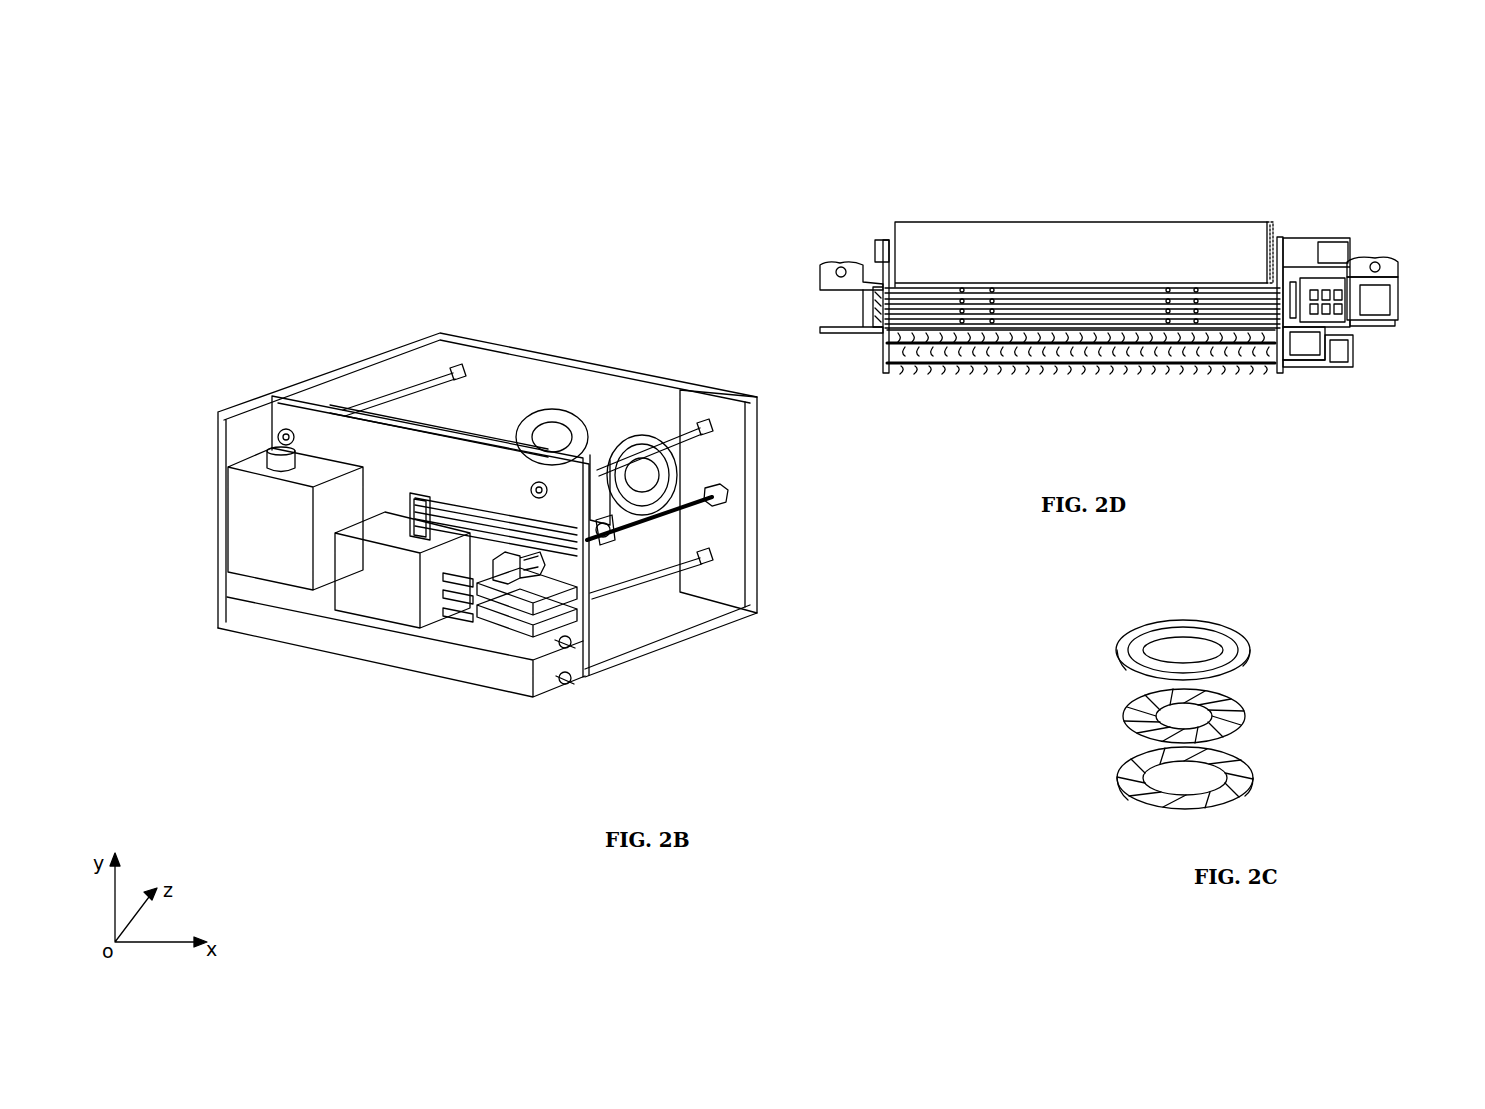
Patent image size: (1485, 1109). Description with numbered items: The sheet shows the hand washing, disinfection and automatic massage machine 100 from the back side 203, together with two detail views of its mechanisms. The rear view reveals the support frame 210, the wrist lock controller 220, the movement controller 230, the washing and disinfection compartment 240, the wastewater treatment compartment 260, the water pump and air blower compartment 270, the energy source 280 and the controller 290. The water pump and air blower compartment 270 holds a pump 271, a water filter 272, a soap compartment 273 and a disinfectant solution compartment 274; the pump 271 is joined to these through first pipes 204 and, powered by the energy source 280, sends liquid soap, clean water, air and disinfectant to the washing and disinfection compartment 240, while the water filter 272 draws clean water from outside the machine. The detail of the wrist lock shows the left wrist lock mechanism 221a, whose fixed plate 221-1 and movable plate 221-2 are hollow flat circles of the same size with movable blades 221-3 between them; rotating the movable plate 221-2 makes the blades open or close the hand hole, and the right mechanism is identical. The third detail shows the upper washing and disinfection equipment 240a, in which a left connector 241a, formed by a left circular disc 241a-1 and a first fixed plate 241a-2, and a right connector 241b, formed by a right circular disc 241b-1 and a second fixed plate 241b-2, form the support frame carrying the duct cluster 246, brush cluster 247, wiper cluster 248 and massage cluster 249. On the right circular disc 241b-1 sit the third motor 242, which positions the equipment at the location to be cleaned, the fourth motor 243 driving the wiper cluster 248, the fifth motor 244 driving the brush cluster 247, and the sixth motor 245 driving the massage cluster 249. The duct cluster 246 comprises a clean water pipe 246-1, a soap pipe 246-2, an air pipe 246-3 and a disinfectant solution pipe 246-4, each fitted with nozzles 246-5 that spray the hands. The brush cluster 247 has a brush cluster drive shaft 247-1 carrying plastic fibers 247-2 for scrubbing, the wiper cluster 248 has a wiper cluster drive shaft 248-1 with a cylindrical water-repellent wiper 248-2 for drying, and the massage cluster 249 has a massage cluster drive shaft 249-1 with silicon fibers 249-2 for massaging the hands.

In FIG. 2B, the hand washing, disinfection and automatic massage machine 100 is at (256, 196).
In FIG. 2B, the back side 203 is at (268, 627).
In FIG. 2B, the first pipes 204 is at (412, 493).
In FIG. 2B, the support frame 210 is at (757, 520).
In FIG. 2B, the wrist lock controller 220 is at (637, 420).
In FIG. 2B, the movement controller 230 is at (603, 527).
In FIG. 2B, the washing and disinfection compartment 240 is at (455, 373).
In FIG. 2B, the wastewater treatment compartment 260 is at (578, 667).
In FIG. 2B, the water pump and air blower compartment 270 is at (528, 812).
In FIG. 2B, the pump 271 is at (408, 595).
In FIG. 2B, the water filter 272 is at (550, 640).
In FIG. 2B, the soap compartment 273 is at (490, 612).
In FIG. 2B, the disinfectant solution compartment 274 is at (518, 610).
In FIG. 2B, the energy source 280 is at (250, 500).
In FIG. 2B, the controller 290 is at (268, 450).
In FIG. 2D, the upper washing and disinfection equipment 240a is at (1140, 107).
In FIG. 2D, the left connector 241a is at (735, 226).
In FIG. 2D, the left circular disc 241a-1 is at (882, 245).
In FIG. 2D, the first fixed plate 241a-2 is at (835, 262).
In FIG. 2D, the right connector 241b is at (1342, 152).
In FIG. 2D, the right circular disc 241b-1 is at (1318, 240).
In FIG. 2D, the second fixed plate 241b-2 is at (1385, 262).
In FIG. 2D, the third motor 242 is at (1397, 322).
In FIG. 2D, the fourth motor 243 is at (1283, 240).
In FIG. 2D, the fifth motor 244 is at (1348, 367).
In FIG. 2D, the sixth motor 245 is at (1292, 335).
In FIG. 2D, the duct cluster 246 is at (873, 140).
In FIG. 2D, the clean water pipe 246-1 is at (901, 286).
In FIG. 2D, the soap pipe 246-2 is at (943, 298).
In FIG. 2D, the air pipe 246-3 is at (1033, 308).
In FIG. 2D, the disinfectant solution pipe 246-4 is at (1093, 318).
In FIG. 2D, the nozzles 246-5 is at (1180, 284).
In FIG. 2D, the brush cluster 247 is at (870, 437).
In FIG. 2D, the brush cluster drive shaft 247-1 is at (907, 370).
In FIG. 2D, the plastic fibers 247-2 is at (975, 370).
In FIG. 2D, the wiper cluster 248 is at (1170, 112).
In FIG. 2D, the wiper cluster drive shaft 248-1 is at (1272, 240).
In FIG. 2D, the wiper 248-2 is at (1225, 232).
In FIG. 2D, the massage cluster 249 is at (1135, 430).
In FIG. 2D, the massage cluster drive shaft 249-1 is at (1230, 368).
In FIG. 2D, the silicon fibers 249-2 is at (1167, 368).
In FIG. 2C, the left wrist lock mechanism 221a is at (1097, 708).
In FIG. 2C, the fixed plate 221-1 is at (1253, 776).
In FIG. 2C, the movable plate 221-2 is at (1248, 644).
In FIG. 2C, the movable blades 221-3 is at (1245, 710).